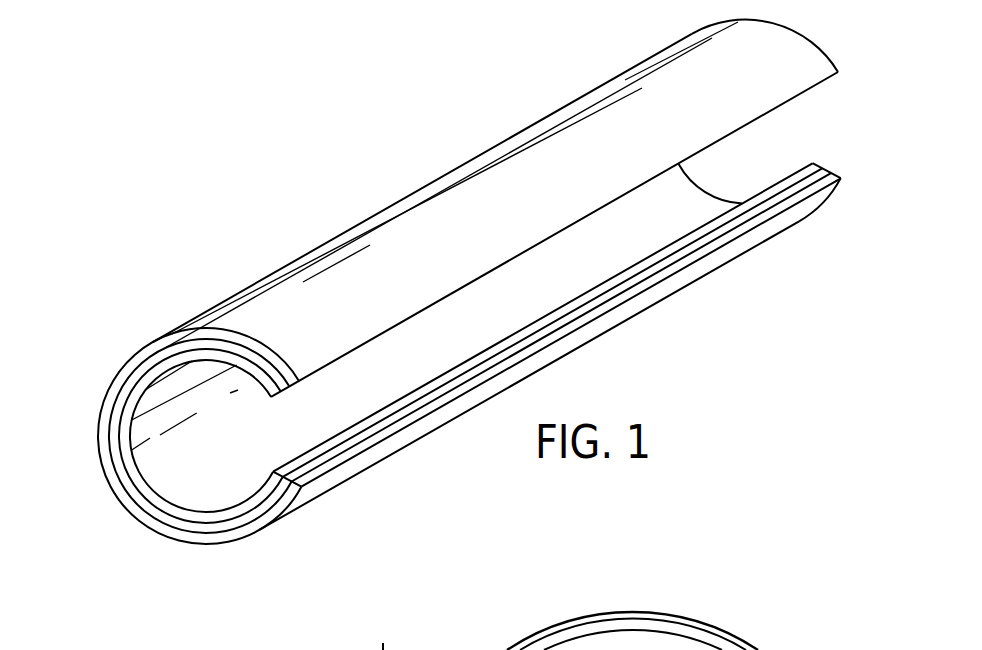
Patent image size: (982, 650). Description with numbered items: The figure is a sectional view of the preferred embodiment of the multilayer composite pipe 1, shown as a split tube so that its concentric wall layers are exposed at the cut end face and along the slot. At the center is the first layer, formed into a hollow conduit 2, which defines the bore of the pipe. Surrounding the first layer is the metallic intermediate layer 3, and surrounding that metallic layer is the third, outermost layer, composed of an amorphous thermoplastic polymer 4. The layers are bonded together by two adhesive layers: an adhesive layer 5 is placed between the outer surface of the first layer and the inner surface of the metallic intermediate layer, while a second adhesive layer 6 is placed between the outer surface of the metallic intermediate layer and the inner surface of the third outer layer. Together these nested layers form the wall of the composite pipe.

The multilayer composite pipe 1 is at (422, 187).
The hollow conduit 2 is at (223, 517).
The metallic intermediate layer 3 is at (193, 527).
The amorphous thermoplastic polymer 4 is at (133, 362).
The adhesive layer 5 is at (122, 461).
The second adhesive layer 6 is at (133, 499).